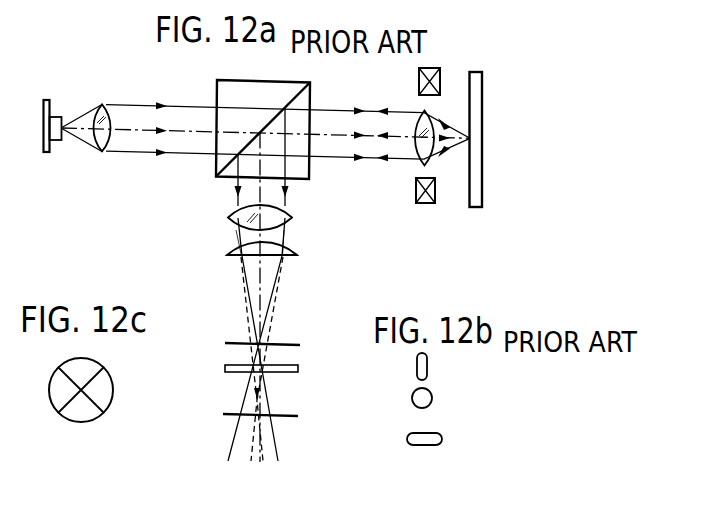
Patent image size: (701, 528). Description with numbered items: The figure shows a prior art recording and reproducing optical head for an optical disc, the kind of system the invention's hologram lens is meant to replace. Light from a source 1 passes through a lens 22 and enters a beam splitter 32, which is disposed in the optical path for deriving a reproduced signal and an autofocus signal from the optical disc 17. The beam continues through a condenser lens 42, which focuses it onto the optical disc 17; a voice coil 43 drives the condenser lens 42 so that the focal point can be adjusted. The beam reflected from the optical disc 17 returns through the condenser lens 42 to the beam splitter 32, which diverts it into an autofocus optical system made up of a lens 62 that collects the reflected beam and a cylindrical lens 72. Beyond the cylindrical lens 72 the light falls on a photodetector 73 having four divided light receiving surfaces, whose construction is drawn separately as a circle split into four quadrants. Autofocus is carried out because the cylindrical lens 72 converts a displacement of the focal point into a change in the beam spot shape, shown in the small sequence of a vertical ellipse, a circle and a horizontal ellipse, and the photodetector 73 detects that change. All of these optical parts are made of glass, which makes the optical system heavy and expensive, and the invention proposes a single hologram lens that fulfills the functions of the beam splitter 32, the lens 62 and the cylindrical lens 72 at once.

In FIG. 12a, the laser light source 1 is at (45, 129).
In FIG. 12a, the collimator lens 22 is at (107, 139).
In FIG. 12a, the beam splitter 32 is at (288, 67).
In FIG. 12a, the condenser lens 42 is at (418, 151).
In FIG. 12a, the voice coil 43 is at (425, 204).
In FIG. 12a, the optical disc 17 is at (483, 119).
In FIG. 12a, the lens 62 is at (291, 213).
In FIG. 12a, the cylindrical lens 72 is at (297, 250).
In FIG. 12a, the photodetector 73 is at (299, 368).
In FIG. 12c, the photodetector 73 is at (115, 388).